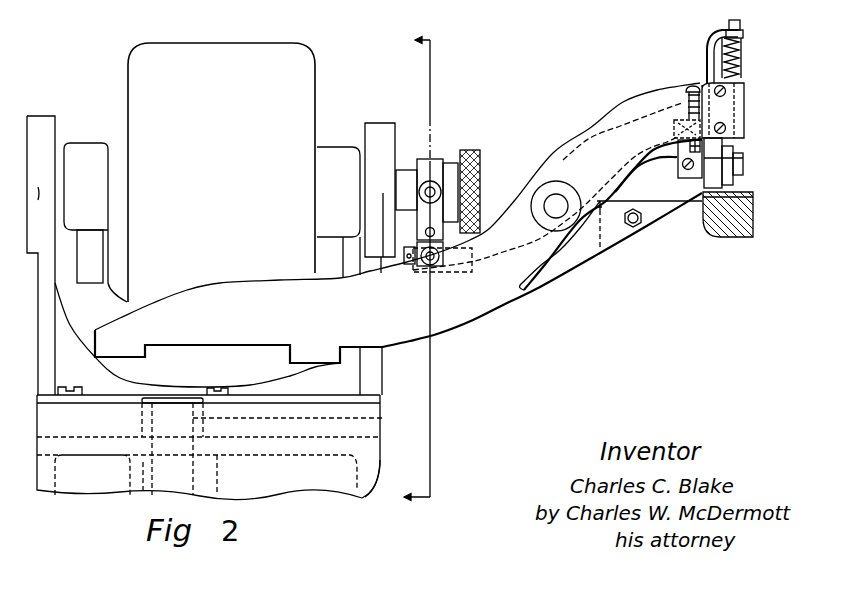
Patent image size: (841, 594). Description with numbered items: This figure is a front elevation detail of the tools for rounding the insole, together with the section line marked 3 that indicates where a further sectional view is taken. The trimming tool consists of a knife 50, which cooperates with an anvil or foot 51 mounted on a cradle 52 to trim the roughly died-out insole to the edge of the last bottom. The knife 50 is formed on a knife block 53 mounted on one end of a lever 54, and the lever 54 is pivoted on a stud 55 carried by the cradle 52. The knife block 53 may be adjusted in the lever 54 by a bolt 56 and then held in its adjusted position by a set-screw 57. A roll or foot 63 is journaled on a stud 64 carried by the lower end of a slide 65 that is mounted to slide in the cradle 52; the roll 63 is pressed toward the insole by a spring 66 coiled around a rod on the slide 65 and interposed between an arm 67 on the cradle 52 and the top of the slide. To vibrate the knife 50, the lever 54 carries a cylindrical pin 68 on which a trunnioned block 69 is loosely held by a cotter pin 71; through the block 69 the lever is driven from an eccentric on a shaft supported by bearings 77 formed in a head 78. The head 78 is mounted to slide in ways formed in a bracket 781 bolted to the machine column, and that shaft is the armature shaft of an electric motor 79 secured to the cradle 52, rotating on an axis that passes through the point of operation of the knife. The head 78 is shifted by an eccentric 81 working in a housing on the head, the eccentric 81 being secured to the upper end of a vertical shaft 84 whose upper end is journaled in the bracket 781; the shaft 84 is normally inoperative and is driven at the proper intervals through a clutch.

The section line 3- 3 is at (407, 268).
The knife 50 is at (703, 185).
The anvil or foot 51 is at (683, 205).
The cradle 52 is at (507, 300).
The knife block 53 is at (730, 157).
The lever 54 is at (545, 163).
The stud 55 is at (556, 206).
The bolt 56 is at (689, 87).
The set-screw 57 is at (680, 148).
The foot 63 is at (737, 190).
The stud 64 is at (741, 170).
The slide 65 is at (738, 145).
The spring 66 is at (740, 67).
The arm 67 is at (740, 36).
The cylindrical pin 68 is at (460, 266).
The block 69 is at (477, 234).
The cotter pin 71 is at (412, 245).
The bearings 77 is at (52, 135).
The head 78 is at (374, 383).
The electric motor 79 is at (250, 50).
The eccentric 81 is at (383, 422).
The vertical shaft 84 is at (150, 480).
The bracket 781 is at (370, 472).